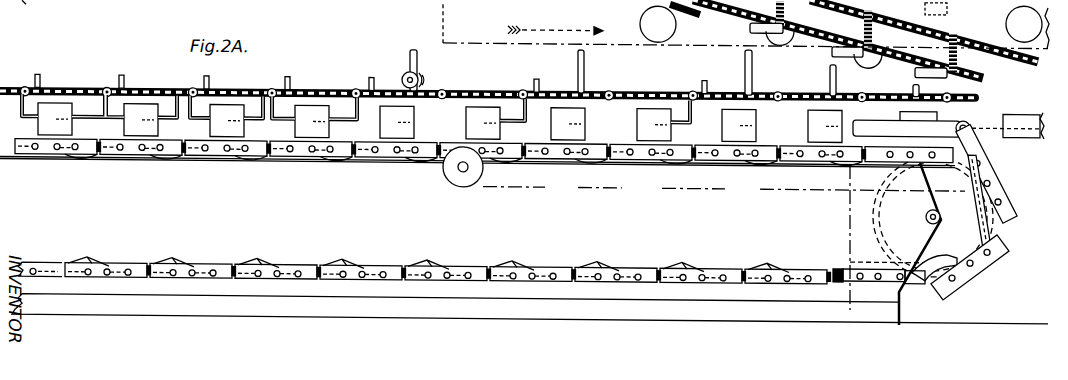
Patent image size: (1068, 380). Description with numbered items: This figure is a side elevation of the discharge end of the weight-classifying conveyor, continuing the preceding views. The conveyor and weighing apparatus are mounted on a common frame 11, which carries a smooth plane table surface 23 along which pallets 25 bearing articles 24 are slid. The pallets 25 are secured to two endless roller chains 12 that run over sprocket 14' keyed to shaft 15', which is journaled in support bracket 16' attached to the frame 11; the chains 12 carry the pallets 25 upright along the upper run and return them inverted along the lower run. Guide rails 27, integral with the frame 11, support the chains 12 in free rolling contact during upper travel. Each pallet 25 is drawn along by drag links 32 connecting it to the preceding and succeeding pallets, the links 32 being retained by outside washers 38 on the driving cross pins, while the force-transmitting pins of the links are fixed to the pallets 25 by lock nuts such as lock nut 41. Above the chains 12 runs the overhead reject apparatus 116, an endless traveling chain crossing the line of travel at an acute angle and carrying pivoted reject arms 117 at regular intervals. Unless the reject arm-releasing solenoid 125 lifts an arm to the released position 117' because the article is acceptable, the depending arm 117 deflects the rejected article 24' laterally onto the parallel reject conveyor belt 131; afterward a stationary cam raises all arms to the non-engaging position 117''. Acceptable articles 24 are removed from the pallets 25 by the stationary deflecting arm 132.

The frame 11 is at (463, 297).
The endless roller chains 12 is at (932, 276).
The sprocket 14' is at (970, 267).
The shaft 15' is at (917, 210).
The support bracket 16' is at (898, 243).
The table surface 23 is at (13, 6).
The articles 24 is at (472, 103).
The rejected articles 24' is at (723, 100).
The pallets 25 is at (52, 147).
The guide rails 27 is at (547, 158).
The drag links 32 is at (157, 157).
The outside washers 38 is at (372, 157).
The lock nut 41 is at (308, 150).
The overhead reject apparatus 116 is at (73, 87).
The pivoted reject arms 117 is at (356, 123).
The reject arm in upper released position 117' is at (477, 48).
The reject arm in upper non-engaging position 117'' is at (854, 49).
The reject arm-releasing solenoid 125 is at (405, 70).
The reject conveyor belt 131 is at (490, 41).
The stationary deflecting arm 132 is at (988, 112).